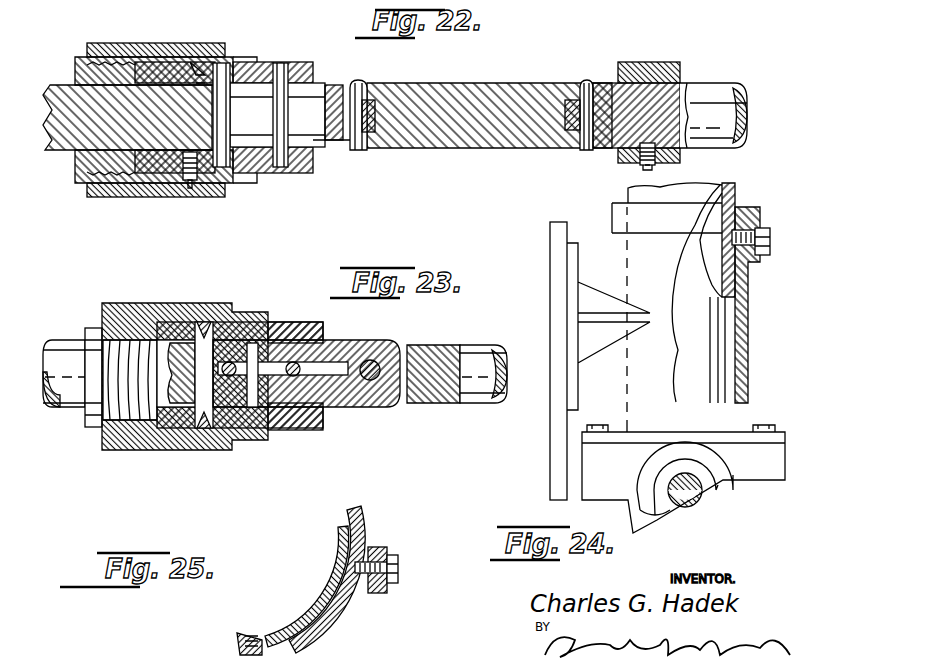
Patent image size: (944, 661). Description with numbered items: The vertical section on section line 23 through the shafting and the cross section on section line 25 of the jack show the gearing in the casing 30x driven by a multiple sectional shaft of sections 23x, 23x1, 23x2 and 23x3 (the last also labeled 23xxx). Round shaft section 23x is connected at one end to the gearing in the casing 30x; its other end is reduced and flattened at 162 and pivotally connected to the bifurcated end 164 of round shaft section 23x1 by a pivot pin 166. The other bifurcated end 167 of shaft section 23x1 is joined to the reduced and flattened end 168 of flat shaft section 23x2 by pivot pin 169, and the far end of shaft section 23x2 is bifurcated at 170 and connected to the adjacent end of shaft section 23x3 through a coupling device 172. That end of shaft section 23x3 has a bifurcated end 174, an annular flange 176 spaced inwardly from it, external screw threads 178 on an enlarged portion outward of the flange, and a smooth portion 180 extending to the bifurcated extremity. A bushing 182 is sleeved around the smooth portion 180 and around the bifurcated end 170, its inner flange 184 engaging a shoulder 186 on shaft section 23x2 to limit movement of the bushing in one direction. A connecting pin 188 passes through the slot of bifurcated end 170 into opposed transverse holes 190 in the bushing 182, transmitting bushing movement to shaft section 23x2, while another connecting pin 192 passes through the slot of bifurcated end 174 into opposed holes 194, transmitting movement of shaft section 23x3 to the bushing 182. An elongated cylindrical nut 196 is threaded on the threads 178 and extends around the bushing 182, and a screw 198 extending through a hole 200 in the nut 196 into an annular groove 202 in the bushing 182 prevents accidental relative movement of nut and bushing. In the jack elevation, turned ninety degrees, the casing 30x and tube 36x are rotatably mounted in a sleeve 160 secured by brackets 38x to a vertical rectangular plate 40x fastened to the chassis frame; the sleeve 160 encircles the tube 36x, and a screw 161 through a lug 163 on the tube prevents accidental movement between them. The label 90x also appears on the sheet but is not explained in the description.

In FIG. 22, the section line 23 is at (42, 113).
In FIG. 22, the round shaft section 23x is at (722, 82).
In FIG. 24, the round shaft section 23x is at (703, 498).
In FIG. 22, the round shaft section 23x1 is at (528, 83).
In FIG. 23, the round shaft section 23x1 is at (488, 345).
In FIG. 22, the flat shaft section 23x2 is at (333, 85).
In FIG. 23, the flat shaft section 23x2 is at (350, 397).
In FIG. 22, the shaft section 23x3 is at (57, 85).
In FIG. 23, the shaft section 23xxx is at (62, 352).
In FIG. 24, the section line 25 is at (712, 240).
In FIG. 24, the casing 30x is at (597, 474).
In FIG. 24, the tube 36x is at (718, 373).
In FIG. 25, the tube 36x is at (347, 557).
In FIG. 24, the brackets 38x is at (597, 305).
In FIG. 24, the vertical rectangular plate 40x is at (550, 250).
In FIG. 22, the member 90x is at (581, 6).
In FIG. 24, the sleeve 160 is at (608, 250).
In FIG. 25, the sleeve 160 is at (337, 613).
In FIG. 24, the screw 161 is at (772, 258).
In FIG. 25, the screw 161 is at (398, 566).
In FIG. 22, the reduced and flattened end 162 is at (598, 108).
In FIG. 22, the lug 163 is at (647, 156).
In FIG. 25, the lug 163 is at (380, 595).
In FIG. 22, the bifurcated end 164 is at (585, 150).
In FIG. 22, the pivot pin 166 is at (572, 150).
In FIG. 22, the bifurcated end 167 is at (352, 152).
In FIG. 23, the bifurcated end 167 is at (400, 392).
In FIG. 22, the reduced and flattened end 168 is at (374, 150).
In FIG. 23, the reduced and flattened end 168 is at (375, 392).
In FIG. 22, the pivot pin 169 is at (350, 148).
In FIG. 23, the pivot pin 169 is at (377, 358).
In FIG. 23, the bifurcated end 170 is at (277, 350).
In FIG. 23, the coupling device 172 is at (206, 290).
In FIG. 23, the bifurcated end 174 is at (243, 443).
In FIG. 23, the annular flange 176 is at (90, 430).
In FIG. 22, the external screw threads 178 is at (97, 88).
In FIG. 23, the external screw threads 178 is at (127, 338).
In FIG. 22, the smooth portion 180 is at (152, 200).
In FIG. 23, the smooth portion 180 is at (173, 328).
In FIG. 22, the bushing 182 is at (300, 62).
In FIG. 23, the bushing 182 is at (306, 322).
In FIG. 22, the inner flange 184 is at (313, 85).
In FIG. 22, the shoulder 186 is at (326, 158).
In FIG. 22, the connecting pin 188 is at (278, 177).
In FIG. 23, the connecting pin 188 is at (294, 376).
In FIG. 22, the opposed transverse holes 190 is at (276, 65).
In FIG. 22, the connecting pin 192 is at (237, 190).
In FIG. 23, the connecting pin 192 is at (238, 320).
In FIG. 22, the opposed holes 194 is at (225, 62).
In FIG. 22, the elongated cylindrical nut 196 is at (150, 43).
In FIG. 23, the elongated cylindrical nut 196 is at (170, 451).
In FIG. 22, the screw 198 is at (198, 200).
In FIG. 22, the hole 200 is at (167, 128).
In FIG. 22, the annular groove 202 is at (192, 62).
In FIG. 23, the annular groove 202 is at (208, 428).